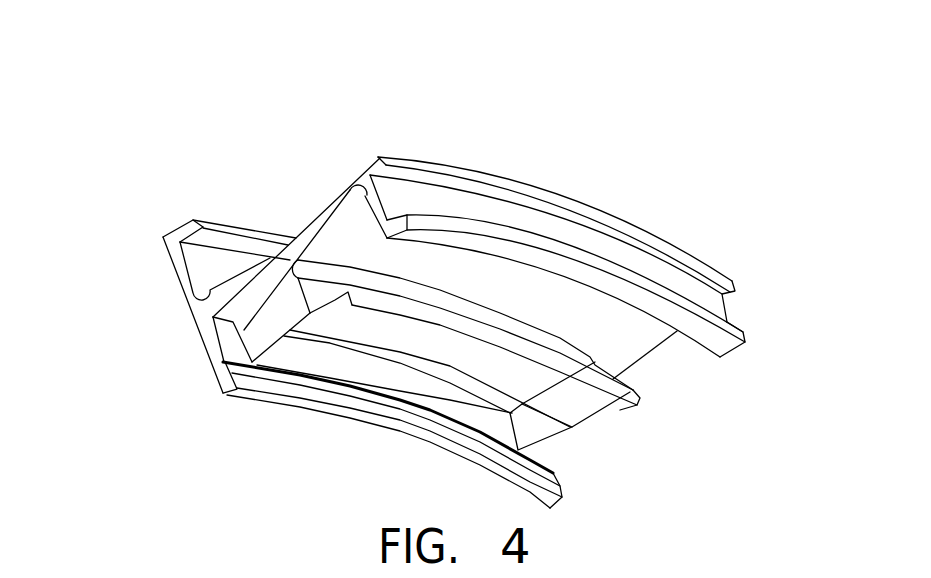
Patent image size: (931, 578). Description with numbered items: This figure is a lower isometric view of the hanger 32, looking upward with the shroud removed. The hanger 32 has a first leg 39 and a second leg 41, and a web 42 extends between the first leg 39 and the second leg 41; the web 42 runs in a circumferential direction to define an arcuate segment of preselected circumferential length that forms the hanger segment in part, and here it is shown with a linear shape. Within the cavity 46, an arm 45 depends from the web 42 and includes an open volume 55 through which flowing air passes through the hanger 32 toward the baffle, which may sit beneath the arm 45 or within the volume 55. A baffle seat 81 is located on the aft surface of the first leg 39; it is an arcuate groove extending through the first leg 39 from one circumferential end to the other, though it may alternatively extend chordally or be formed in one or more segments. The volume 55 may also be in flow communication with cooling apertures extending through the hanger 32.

The hanger 32 is at (409, 296).
The first leg 39 is at (184, 290).
The second leg 41 is at (620, 255).
The web 42 is at (307, 222).
The arm 45 is at (250, 331).
The cavity 46 is at (433, 268).
The open volume 55 is at (468, 428).
The baffle seat 81 is at (272, 383).